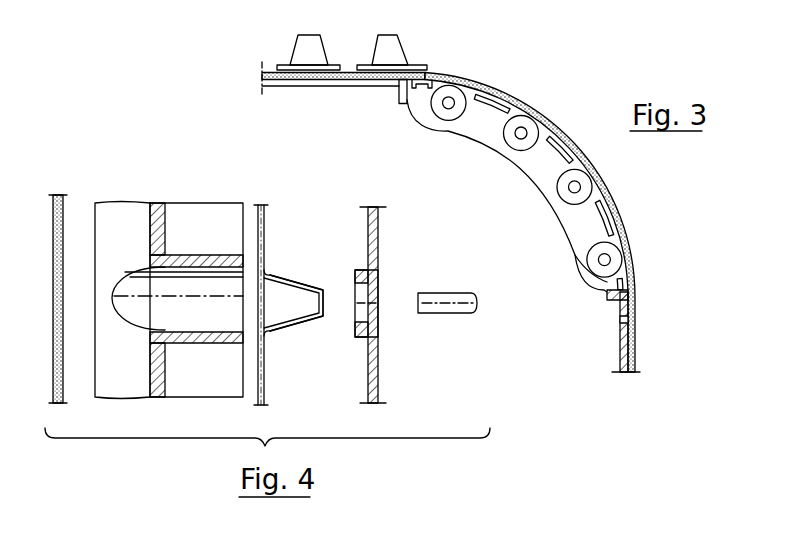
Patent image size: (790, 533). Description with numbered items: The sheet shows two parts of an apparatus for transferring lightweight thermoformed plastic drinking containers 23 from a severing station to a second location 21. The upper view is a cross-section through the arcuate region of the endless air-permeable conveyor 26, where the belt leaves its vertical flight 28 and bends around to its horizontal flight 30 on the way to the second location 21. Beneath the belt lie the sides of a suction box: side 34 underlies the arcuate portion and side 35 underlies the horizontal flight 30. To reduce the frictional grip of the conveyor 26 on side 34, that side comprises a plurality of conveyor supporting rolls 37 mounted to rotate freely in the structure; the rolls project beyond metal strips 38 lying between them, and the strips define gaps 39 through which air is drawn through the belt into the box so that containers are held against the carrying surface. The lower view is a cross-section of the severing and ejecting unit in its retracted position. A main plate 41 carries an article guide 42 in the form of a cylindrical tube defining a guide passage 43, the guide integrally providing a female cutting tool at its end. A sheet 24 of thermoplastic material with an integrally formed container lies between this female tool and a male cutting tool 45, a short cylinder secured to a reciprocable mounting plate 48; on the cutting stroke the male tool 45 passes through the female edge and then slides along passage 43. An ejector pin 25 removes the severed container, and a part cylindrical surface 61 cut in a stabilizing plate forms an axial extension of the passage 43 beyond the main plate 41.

In FIG. 4, the second location 21 is at (262, 262).
In FIG. 3, the containers 23 is at (398, 68).
In FIG. 4, the containers 23 is at (297, 327).
In FIG. 4, the sheet 24 is at (265, 214).
In FIG. 4, the ejector pins 25 is at (428, 316).
In FIG. 4, the conveyor 26 is at (53, 341).
In FIG. 3, the vertical flight 28 is at (634, 303).
In FIG. 3, the horizontal flight 30 is at (268, 70).
In FIG. 3, the side 34 is at (536, 176).
In FIG. 3, the side 35 is at (327, 88).
In FIG. 3, the conveyor supporting rolls 37 is at (503, 134).
In FIG. 3, the metal strips 38 is at (500, 87).
In FIG. 3, the gaps 39 is at (512, 113).
In FIG. 4, the main plate 41 is at (162, 222).
In FIG. 4, the article guides 42 is at (198, 257).
In FIG. 4, the cylindrical guide passage 43 is at (196, 345).
In FIG. 4, the male cutting tool 45 is at (380, 330).
In FIG. 4, the mounting plate 48 is at (380, 388).
In FIG. 4, the part cylindrical surface 61 is at (118, 317).